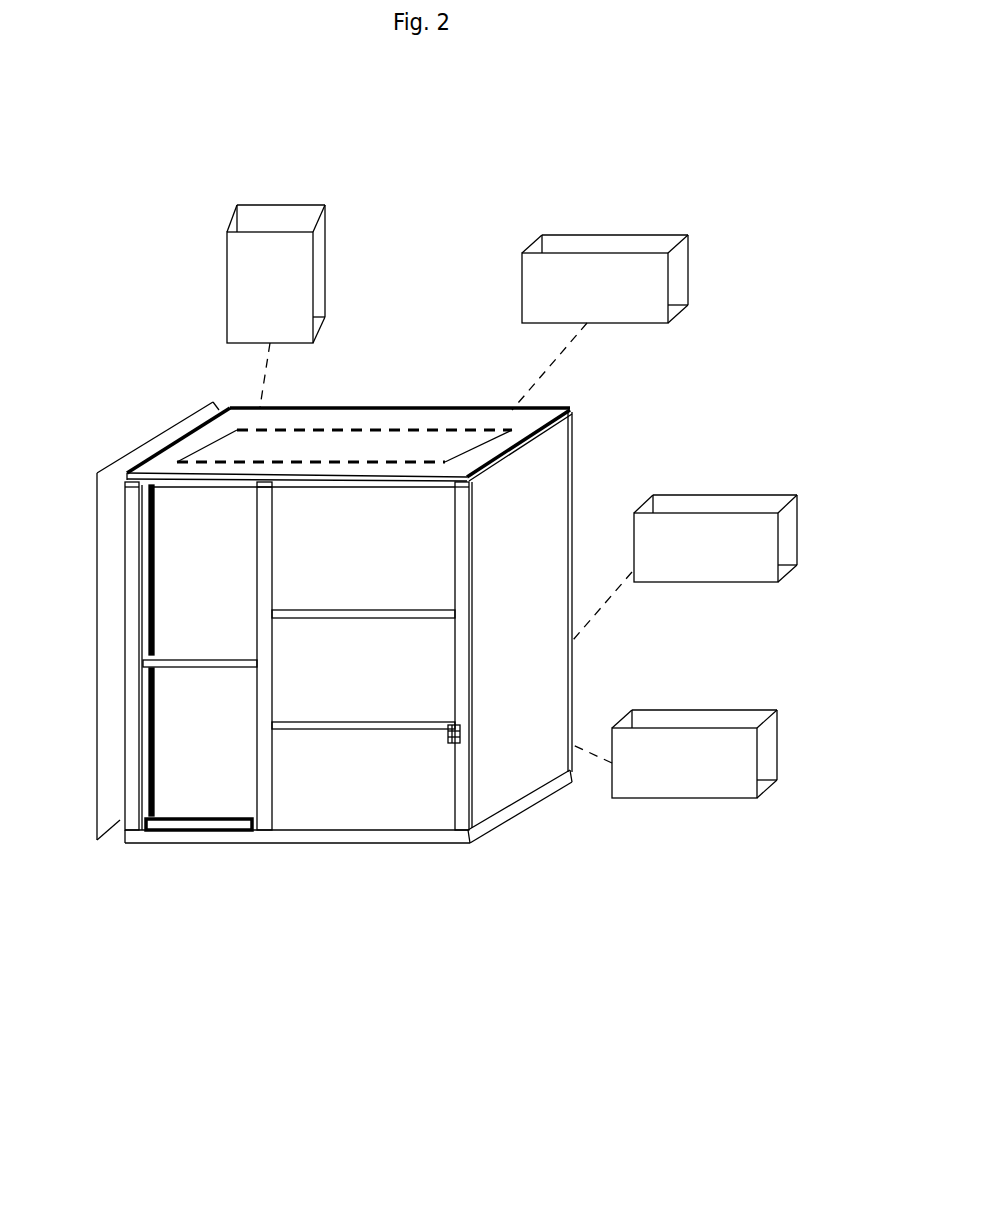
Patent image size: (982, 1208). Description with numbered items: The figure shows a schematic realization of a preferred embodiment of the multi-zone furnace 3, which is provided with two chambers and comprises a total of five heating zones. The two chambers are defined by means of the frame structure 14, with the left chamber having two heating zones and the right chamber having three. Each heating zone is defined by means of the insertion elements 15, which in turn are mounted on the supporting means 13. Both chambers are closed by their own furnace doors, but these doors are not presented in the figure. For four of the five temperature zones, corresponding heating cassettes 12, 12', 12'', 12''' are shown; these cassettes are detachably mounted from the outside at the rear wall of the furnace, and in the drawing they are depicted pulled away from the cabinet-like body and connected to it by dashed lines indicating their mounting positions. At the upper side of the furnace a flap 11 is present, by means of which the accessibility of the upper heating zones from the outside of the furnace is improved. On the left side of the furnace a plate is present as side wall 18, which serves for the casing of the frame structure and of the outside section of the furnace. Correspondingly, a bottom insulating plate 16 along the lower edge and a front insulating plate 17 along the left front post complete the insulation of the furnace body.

The furnace 3 is at (160, 227).
The flap 11 is at (238, 442).
The heating cassette 12 is at (292, 275).
The heating cassette 12' is at (600, 292).
The heating cassette 12'' is at (690, 536).
The heating cassette 12''' is at (680, 722).
The supporting means 13 is at (460, 735).
The frame structure 14 is at (395, 845).
The insertion element 15 is at (343, 722).
The bottom insulating plate 16 is at (186, 820).
The front insulating plate 17 is at (133, 830).
The side wall 18 is at (142, 443).